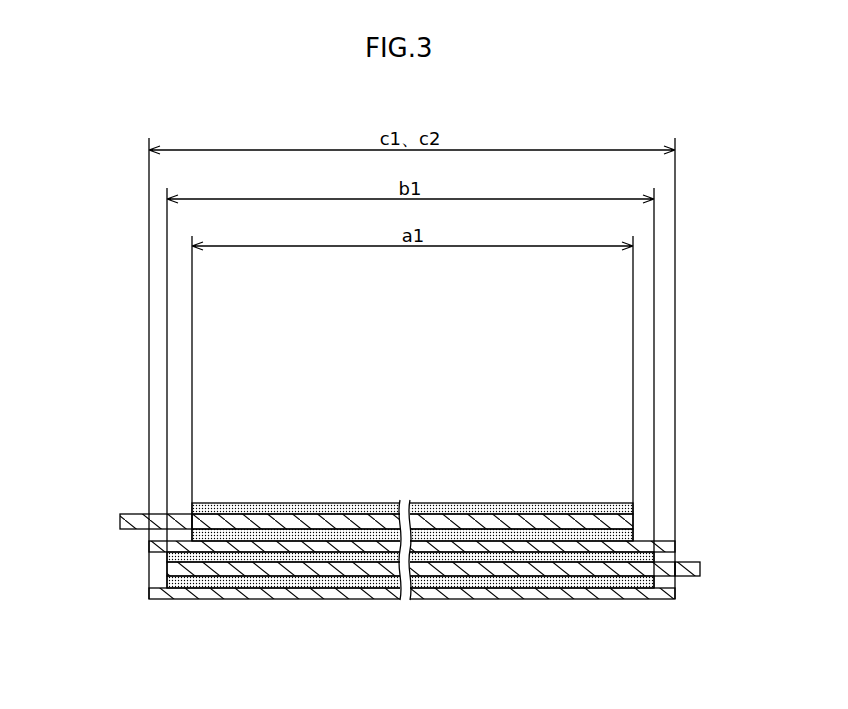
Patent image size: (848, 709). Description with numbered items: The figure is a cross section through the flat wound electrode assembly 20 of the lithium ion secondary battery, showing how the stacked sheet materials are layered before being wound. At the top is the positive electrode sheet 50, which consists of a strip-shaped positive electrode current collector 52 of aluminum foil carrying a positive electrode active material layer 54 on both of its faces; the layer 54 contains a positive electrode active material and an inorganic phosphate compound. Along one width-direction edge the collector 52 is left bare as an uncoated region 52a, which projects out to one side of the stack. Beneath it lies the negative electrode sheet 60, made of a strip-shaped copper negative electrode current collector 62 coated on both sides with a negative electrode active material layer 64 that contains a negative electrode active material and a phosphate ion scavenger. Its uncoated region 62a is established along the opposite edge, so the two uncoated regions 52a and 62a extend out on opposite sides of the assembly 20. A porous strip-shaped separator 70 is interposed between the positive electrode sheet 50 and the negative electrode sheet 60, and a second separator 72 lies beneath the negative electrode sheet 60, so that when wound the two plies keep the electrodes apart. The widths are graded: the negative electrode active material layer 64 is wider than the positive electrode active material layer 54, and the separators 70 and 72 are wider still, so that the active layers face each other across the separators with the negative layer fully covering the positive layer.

The wound electrode assembly 20 is at (401, 548).
The positive electrode sheet 50 is at (323, 478).
The positive electrode current collector 52 is at (500, 514).
The uncoated region 52a is at (142, 514).
The positive electrode active material layer 54 is at (239, 529).
The negative electrode sheet 60 is at (479, 609).
The negative electrode current collector 62 is at (327, 576).
The uncoated region 62a is at (702, 563).
The negative electrode active material layer 64 is at (470, 588).
The separator 70 is at (165, 552).
The separator 72 is at (158, 600).